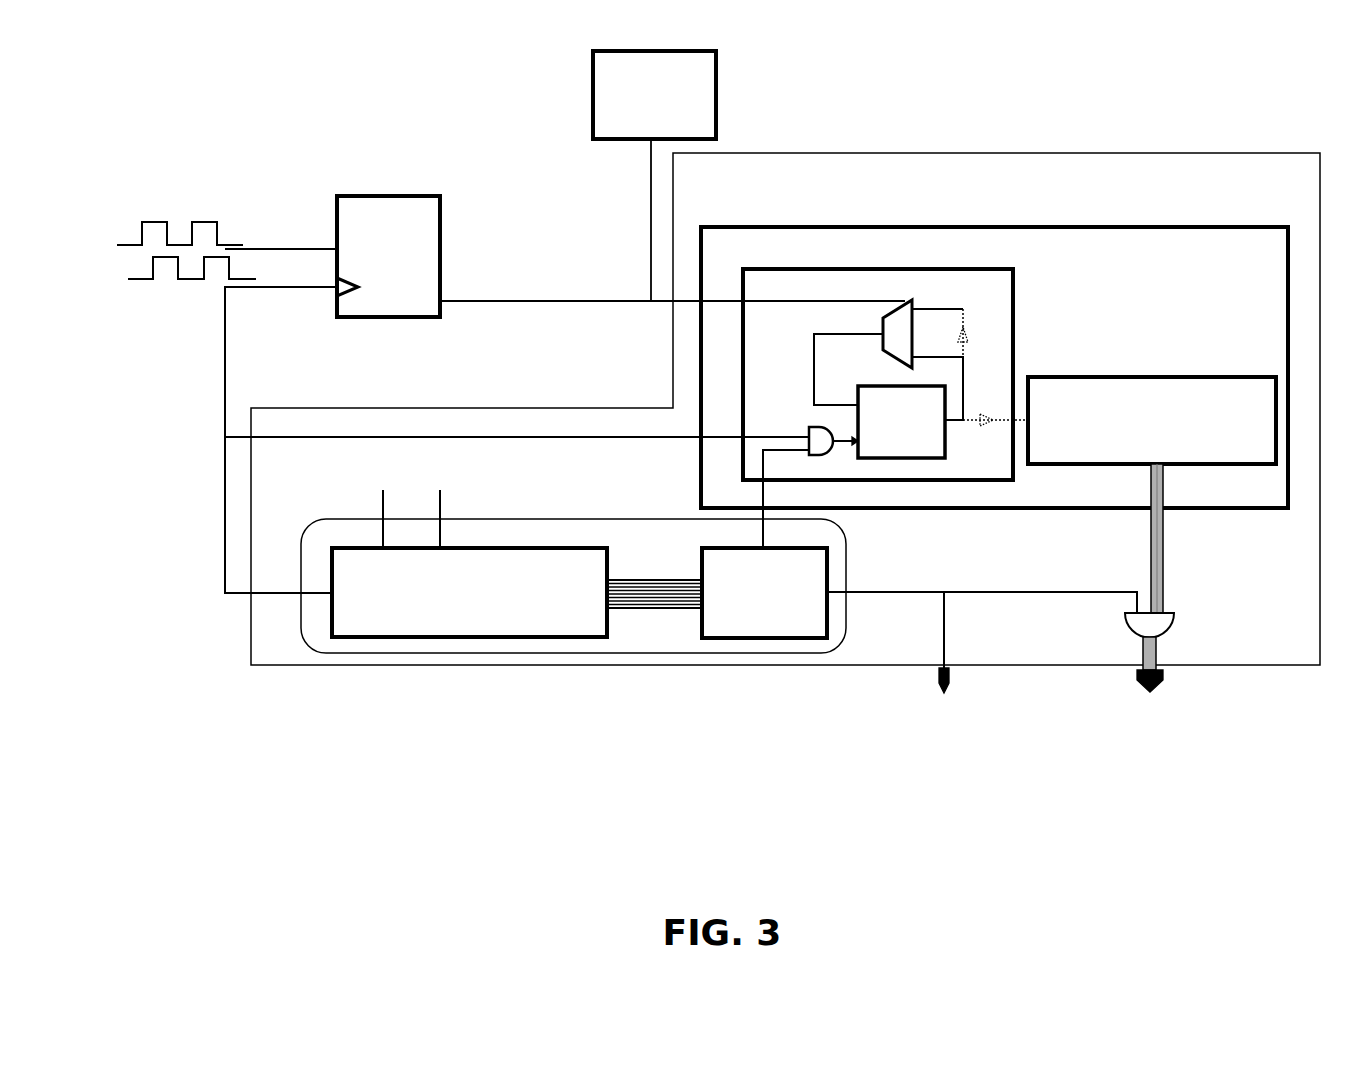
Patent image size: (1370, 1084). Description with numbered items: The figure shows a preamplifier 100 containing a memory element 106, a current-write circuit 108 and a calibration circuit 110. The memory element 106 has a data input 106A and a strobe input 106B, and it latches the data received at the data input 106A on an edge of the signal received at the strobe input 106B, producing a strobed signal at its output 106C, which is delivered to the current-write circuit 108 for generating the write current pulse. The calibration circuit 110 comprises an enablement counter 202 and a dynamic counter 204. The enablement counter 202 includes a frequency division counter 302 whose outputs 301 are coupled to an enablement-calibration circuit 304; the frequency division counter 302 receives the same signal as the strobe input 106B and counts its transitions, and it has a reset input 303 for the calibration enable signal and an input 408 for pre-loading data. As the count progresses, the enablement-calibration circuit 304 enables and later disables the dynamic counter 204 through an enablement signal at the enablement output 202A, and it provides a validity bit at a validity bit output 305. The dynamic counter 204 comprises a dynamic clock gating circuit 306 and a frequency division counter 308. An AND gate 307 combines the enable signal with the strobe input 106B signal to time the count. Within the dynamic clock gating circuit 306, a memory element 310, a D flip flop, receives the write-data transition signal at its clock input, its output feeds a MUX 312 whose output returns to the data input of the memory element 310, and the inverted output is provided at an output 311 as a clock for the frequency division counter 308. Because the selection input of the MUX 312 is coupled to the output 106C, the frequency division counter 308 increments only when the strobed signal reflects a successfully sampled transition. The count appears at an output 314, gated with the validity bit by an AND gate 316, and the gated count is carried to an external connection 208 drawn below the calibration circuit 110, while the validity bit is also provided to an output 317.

The preamplifier 100 is at (557, 735).
The calibration circuit 110 is at (313, 665).
The current-write circuit 108 is at (654, 176).
The memory element 106 is at (565, 394).
The data input 106A is at (306, 245).
The strobe input 106B is at (517, 435).
The output 106C is at (648, 301).
The dynamic counter 204 is at (994, 367).
The dynamic clock gating circuit 306 is at (1013, 307).
The MUX 312 is at (916, 300).
The memory element 310 is at (898, 422).
The AND gate 307 is at (817, 425).
The output 311 is at (1018, 425).
The frequency division counter 308 is at (1152, 420).
The output 314 is at (1170, 512).
The AND gate 316 is at (1177, 617).
The output terminal 208 is at (1124, 692).
The enablement counter 202 is at (573, 586).
The frequency division counter 302 is at (469, 592).
The enablement-calibration circuit 304 is at (764, 593).
The outputs 301 is at (621, 577).
The reset input 303 is at (440, 500).
The input 408 is at (375, 505).
The validity bit output 305 is at (850, 590).
The output 317 is at (932, 683).
The enablement output 202A is at (760, 515).